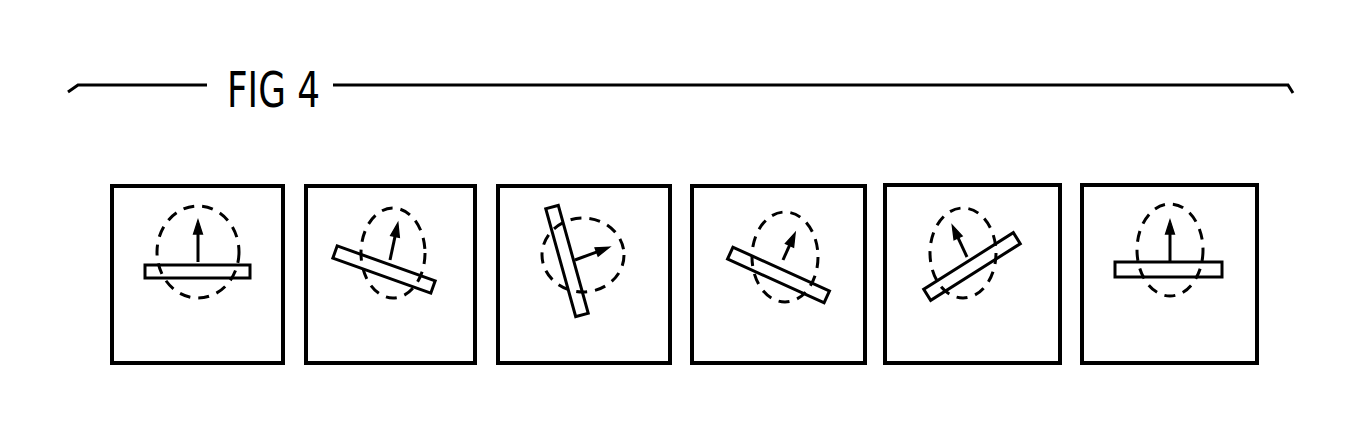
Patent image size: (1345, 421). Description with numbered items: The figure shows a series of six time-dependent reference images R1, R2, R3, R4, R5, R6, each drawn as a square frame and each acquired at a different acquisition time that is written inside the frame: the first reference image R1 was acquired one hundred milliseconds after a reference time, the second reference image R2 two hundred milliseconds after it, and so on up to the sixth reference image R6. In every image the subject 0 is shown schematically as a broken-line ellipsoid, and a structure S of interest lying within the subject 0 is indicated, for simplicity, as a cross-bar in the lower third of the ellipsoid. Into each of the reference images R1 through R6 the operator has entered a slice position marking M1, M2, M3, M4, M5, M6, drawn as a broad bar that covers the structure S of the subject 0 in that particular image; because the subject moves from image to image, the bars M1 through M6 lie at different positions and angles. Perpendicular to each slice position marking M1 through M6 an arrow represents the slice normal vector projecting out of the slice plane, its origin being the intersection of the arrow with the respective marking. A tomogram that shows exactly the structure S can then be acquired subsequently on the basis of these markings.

The first reference image R1 is at (143, 186).
The second reference image R2 is at (390, 186).
The third reference image R3 is at (585, 186).
The fourth reference image R4 is at (778, 186).
The fifth reference image R5 is at (972, 185).
The sixth reference image R6 is at (1168, 185).
The slice position marking M1 is at (162, 264).
The slice position marking M2 is at (426, 272).
The slice position marking M3 is at (587, 299).
The slice position marking M4 is at (815, 283).
The slice position marking M5 is at (1013, 256).
The slice position marking M6 is at (1128, 261).
The subject 0 is at (207, 210).
The structure S is at (212, 262).